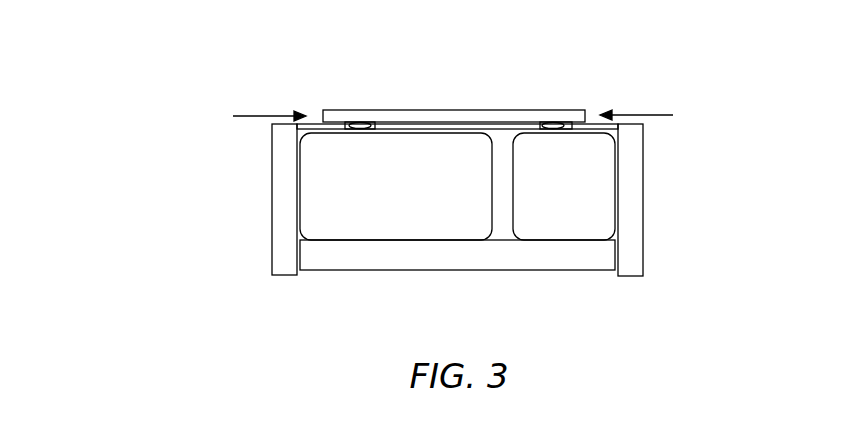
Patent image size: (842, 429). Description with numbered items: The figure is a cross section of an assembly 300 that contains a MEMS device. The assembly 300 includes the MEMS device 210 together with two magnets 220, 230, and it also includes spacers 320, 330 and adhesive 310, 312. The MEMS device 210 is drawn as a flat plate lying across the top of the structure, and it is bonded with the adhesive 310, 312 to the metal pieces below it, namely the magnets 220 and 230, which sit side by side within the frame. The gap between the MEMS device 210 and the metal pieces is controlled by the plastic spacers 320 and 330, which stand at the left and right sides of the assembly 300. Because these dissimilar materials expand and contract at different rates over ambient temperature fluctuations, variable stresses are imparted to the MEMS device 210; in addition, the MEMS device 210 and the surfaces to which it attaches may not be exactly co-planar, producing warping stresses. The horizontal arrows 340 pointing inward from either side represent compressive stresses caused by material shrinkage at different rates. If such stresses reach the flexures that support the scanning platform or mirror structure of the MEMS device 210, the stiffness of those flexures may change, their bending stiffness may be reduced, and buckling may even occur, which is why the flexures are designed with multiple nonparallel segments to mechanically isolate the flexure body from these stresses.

The assembly 300 is at (164, 101).
The MEMS device 210 is at (431, 110).
The magnet 220 is at (380, 194).
The magnet 230 is at (554, 191).
The adhesive 310 is at (361, 122).
The adhesive 312 is at (552, 122).
The spacer 320 is at (272, 185).
The spacer 330 is at (642, 222).
The arrows 340 is at (253, 111).